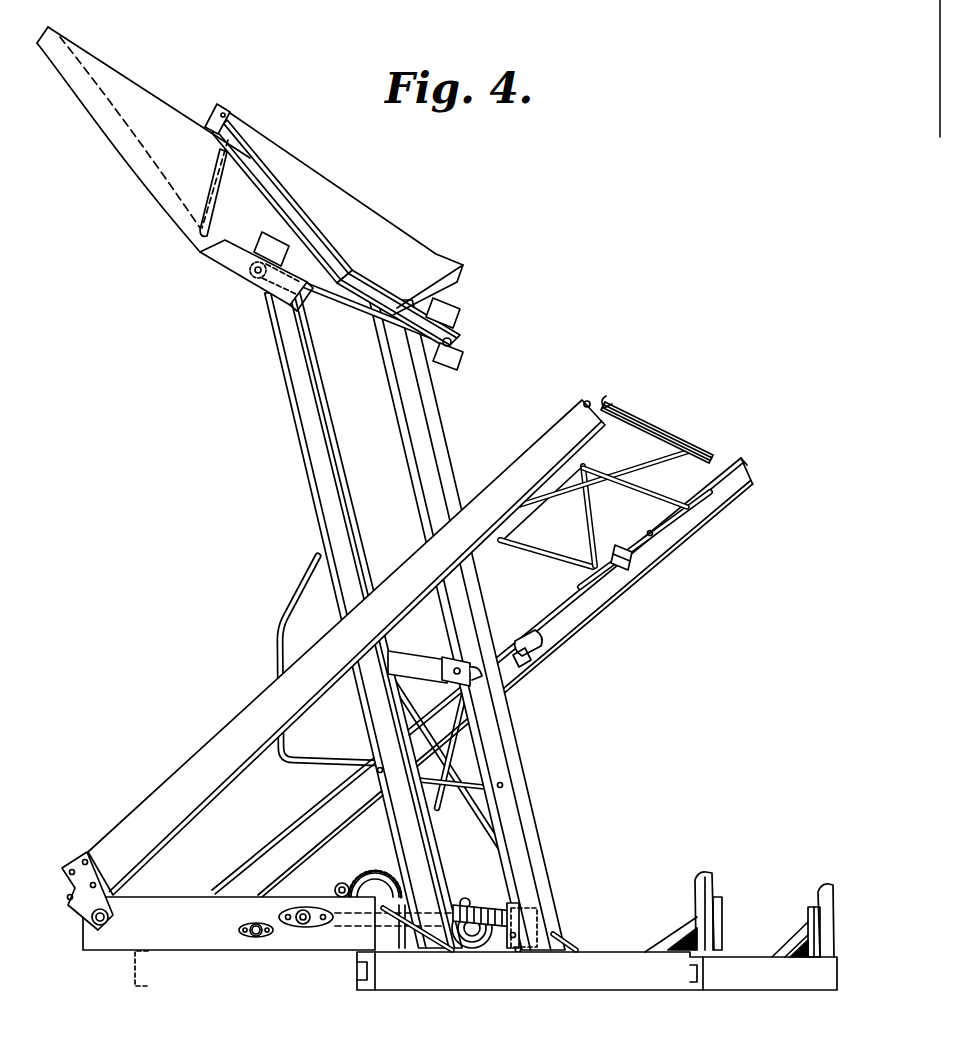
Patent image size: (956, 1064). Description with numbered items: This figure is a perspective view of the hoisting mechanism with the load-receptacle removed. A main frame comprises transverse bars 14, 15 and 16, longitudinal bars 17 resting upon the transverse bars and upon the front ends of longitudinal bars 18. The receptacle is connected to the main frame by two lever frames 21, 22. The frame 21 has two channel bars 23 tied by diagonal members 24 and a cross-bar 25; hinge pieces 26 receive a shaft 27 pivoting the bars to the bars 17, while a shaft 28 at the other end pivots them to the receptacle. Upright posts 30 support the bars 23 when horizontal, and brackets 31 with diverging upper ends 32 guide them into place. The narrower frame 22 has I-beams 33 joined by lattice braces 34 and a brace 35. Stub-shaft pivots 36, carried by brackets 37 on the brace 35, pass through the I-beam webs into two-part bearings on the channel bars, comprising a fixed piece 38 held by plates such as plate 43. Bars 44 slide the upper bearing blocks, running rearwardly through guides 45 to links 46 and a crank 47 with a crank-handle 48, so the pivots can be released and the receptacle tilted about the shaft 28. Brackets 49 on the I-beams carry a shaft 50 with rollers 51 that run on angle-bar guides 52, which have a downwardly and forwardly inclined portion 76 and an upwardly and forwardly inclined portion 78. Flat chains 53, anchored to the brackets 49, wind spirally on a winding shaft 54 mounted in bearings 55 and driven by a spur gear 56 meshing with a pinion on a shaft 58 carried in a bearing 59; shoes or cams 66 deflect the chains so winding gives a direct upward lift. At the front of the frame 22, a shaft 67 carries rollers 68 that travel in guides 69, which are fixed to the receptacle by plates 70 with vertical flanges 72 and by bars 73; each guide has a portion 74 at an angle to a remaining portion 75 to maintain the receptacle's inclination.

The transverse bar 14 is at (150, 972).
The transverse bar 15 is at (366, 972).
The transverse bar 16 is at (780, 990).
The longitudinal bar 17 is at (172, 893).
The longitudinal bar 18 is at (597, 980).
The frame 21 is at (427, 638).
The frame 22 is at (403, 621).
The channel bar 23 is at (560, 421).
The diagonal member 24 is at (658, 472).
The cross-bar 25 is at (537, 553).
The hinge piece 26 is at (78, 863).
The shaft 27 is at (90, 925).
The shaft 28 is at (670, 437).
The upright post 30 is at (722, 918).
The bracket 31 is at (697, 918).
The diverging upper end 32 is at (703, 874).
The I-beam 33 is at (287, 355).
The lattice brace 34 is at (450, 765).
The brace 35 is at (418, 707).
The pivot 36 is at (478, 677).
The bracket 37 is at (438, 655).
The fixed piece 38 is at (545, 645).
The plate 43 is at (528, 663).
The bar 44 is at (590, 600).
The guide 45 is at (637, 560).
The link 46 is at (675, 522).
The crank 47 is at (597, 469).
The crank-handle 48 is at (614, 392).
The bracket 49 is at (515, 946).
The shaft 50 is at (520, 917).
The roller 51 is at (402, 930).
The angle bar 52 is at (422, 932).
The chain 53 is at (340, 886).
The winding shaft 54 is at (300, 927).
The bearing 55 is at (322, 923).
The spur gear 56 is at (382, 874).
The shaft 58 is at (255, 937).
The bearing 59 is at (255, 924).
The shoe or cam 66 is at (427, 633).
The shaft 67 is at (330, 300).
The roller 68 is at (260, 279).
The guide or rail 69 is at (228, 246).
The plate 70 is at (145, 103).
The vertical flange 72 is at (221, 167).
The bar 73 is at (266, 240).
The portion of guide 74 is at (230, 265).
The remaining portion of guide 75 is at (108, 144).
The downwardly and forwardly inclined portion 76 is at (800, 952).
The upwardly and forwardly inclined portion 78 is at (566, 943).